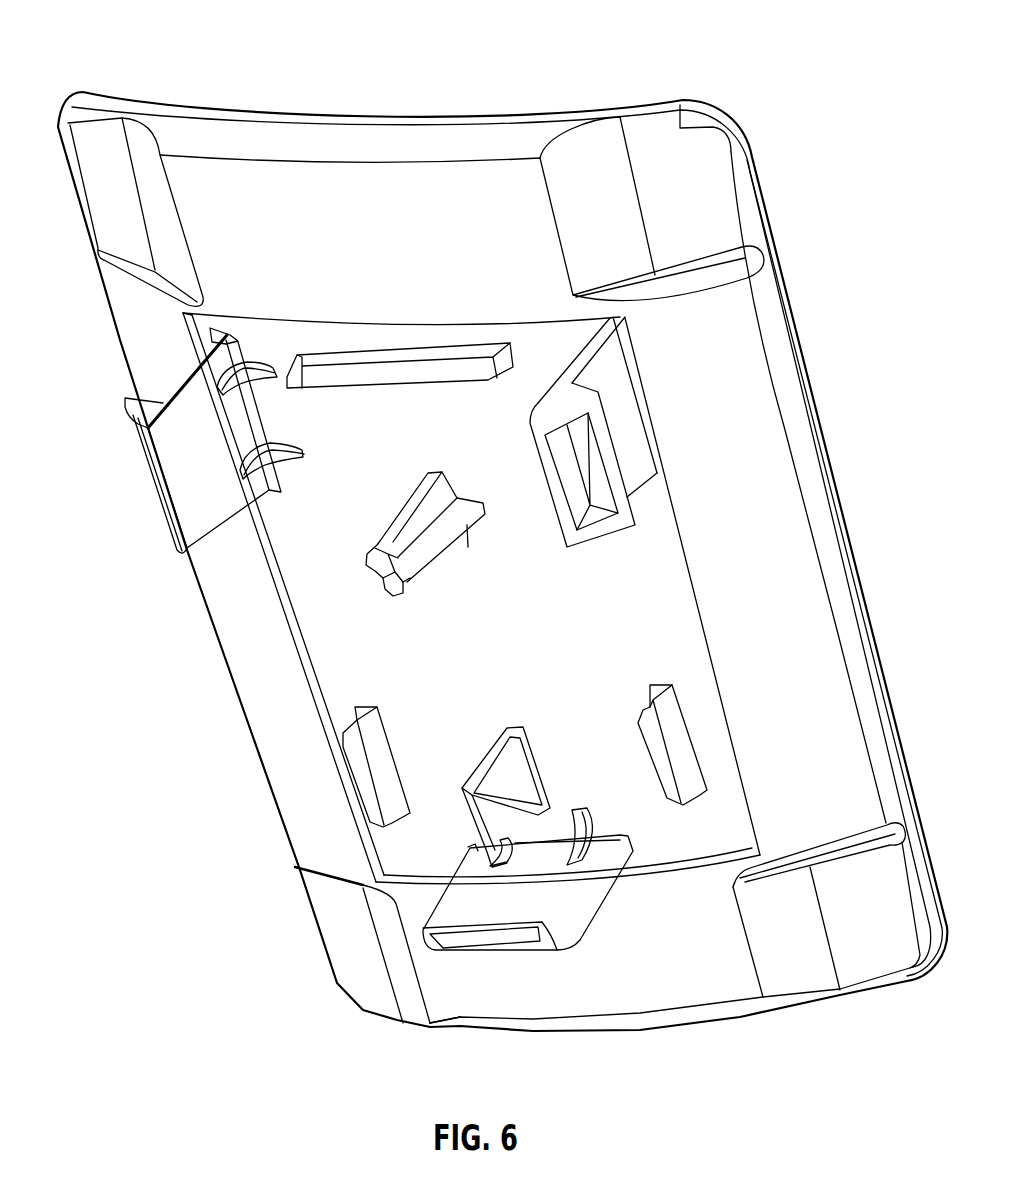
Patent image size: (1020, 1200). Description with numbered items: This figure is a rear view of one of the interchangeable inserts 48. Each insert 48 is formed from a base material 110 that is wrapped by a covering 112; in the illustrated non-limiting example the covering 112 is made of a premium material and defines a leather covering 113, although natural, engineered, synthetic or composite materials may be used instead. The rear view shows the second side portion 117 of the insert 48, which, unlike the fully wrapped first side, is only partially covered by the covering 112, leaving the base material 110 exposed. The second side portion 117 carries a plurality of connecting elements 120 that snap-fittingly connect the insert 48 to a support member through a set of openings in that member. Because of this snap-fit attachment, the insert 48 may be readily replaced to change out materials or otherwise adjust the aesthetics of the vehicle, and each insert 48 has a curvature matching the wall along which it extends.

The insert 48 is at (126, 49).
The base material 110 is at (360, 685).
The covering 112 is at (723, 993).
The leather covering 113 is at (752, 557).
The second side portion 117 is at (390, 610).
The connecting elements 120 is at (141, 484).